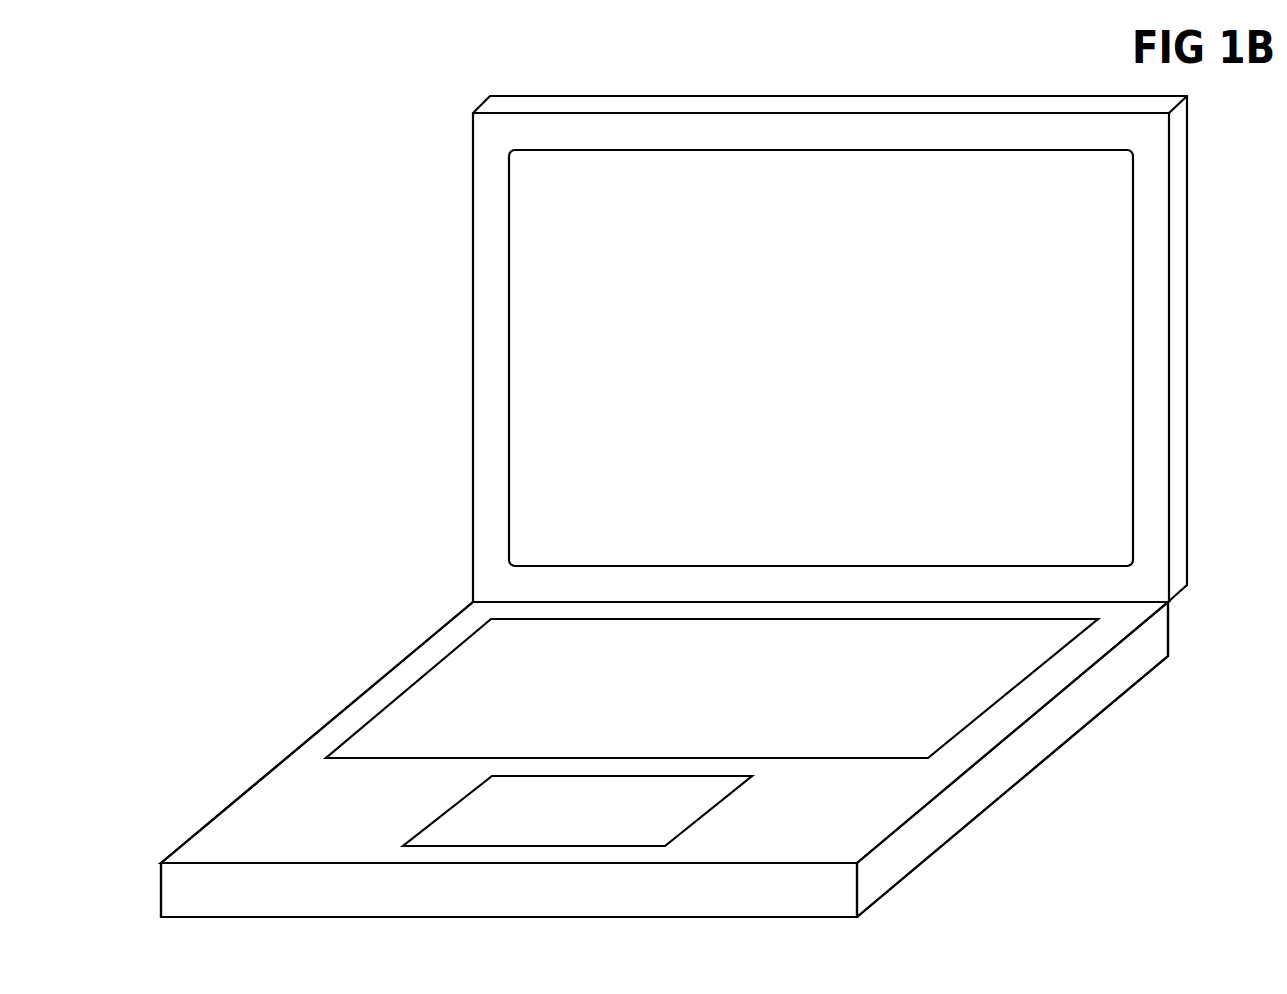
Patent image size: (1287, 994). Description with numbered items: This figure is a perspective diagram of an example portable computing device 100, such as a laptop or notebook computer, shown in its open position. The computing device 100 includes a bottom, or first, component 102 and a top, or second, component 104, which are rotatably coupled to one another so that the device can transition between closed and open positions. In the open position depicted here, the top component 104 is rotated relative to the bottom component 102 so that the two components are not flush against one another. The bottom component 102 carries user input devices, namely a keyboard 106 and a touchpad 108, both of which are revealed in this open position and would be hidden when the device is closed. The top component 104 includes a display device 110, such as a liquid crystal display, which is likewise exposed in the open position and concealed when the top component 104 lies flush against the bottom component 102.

The portable computing device 100 is at (282, 219).
The bottom component 102 is at (1162, 650).
The top component 104 is at (1180, 268).
The keyboard 106 is at (732, 713).
The touchpad 108 is at (597, 823).
The display device 110 is at (838, 382).